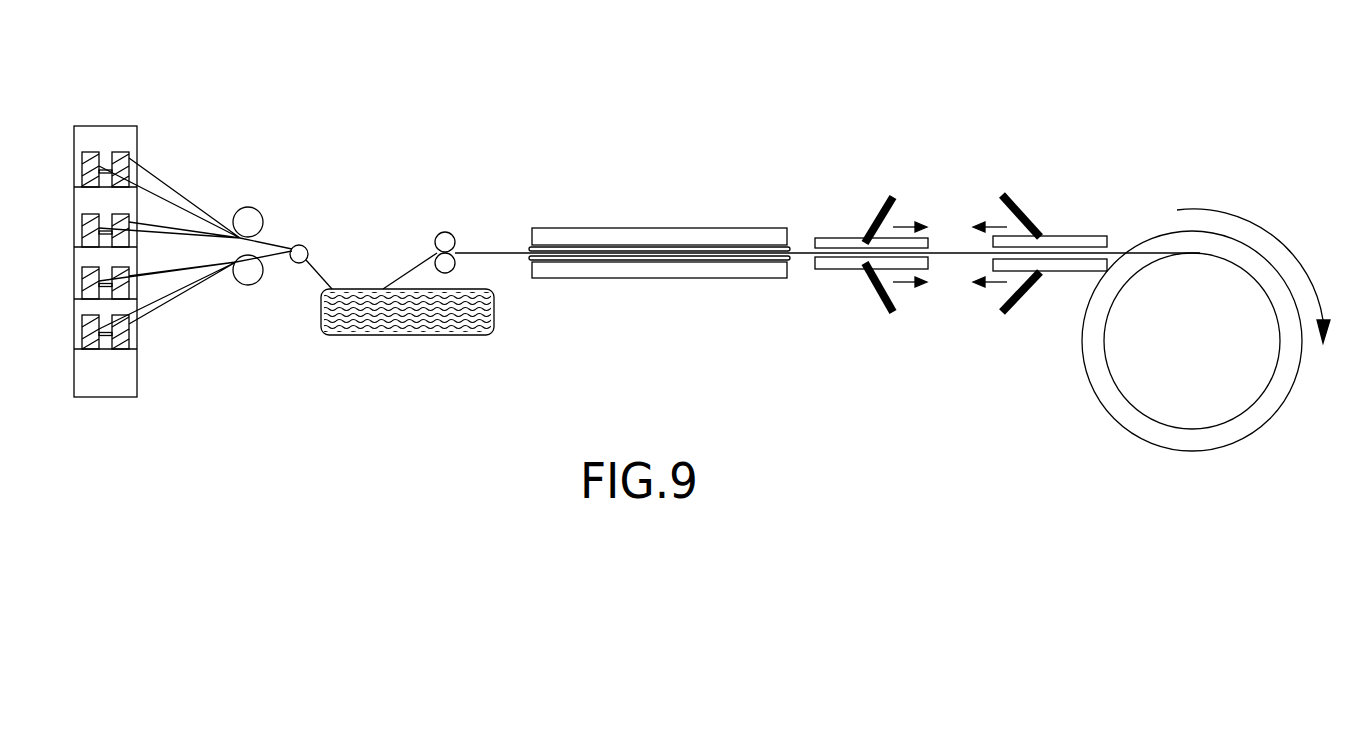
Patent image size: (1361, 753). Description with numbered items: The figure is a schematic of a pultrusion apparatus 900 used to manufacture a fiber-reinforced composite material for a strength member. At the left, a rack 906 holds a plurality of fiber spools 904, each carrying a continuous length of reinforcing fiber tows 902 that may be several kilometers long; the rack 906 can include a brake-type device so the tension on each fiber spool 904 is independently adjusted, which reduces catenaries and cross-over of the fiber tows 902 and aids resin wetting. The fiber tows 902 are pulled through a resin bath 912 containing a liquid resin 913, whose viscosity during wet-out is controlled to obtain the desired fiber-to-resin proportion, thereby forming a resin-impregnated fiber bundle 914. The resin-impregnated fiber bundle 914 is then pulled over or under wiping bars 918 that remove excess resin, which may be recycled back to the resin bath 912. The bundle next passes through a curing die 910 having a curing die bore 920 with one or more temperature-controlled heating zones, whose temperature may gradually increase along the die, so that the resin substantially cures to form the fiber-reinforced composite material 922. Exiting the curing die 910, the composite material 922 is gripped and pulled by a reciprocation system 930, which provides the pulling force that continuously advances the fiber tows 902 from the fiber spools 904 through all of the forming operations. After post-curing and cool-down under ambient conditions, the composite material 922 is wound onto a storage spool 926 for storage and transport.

The pultrusion apparatus 900 is at (722, 98).
The fiber tows 902 is at (170, 184).
The fiber spools 904 is at (130, 337).
The rack 906 is at (113, 125).
The curing die 910 is at (630, 228).
The resin bath 912 is at (368, 336).
The liquid resin 913 is at (457, 336).
The resin-impregnated fiber bundle 914 is at (410, 270).
The wiping bars 918 is at (449, 232).
The curing die bore 920 is at (693, 245).
The fiber-reinforced composite material 922 is at (797, 252).
The storage spool 926 is at (1137, 427).
The reciprocation system 930 is at (937, 184).